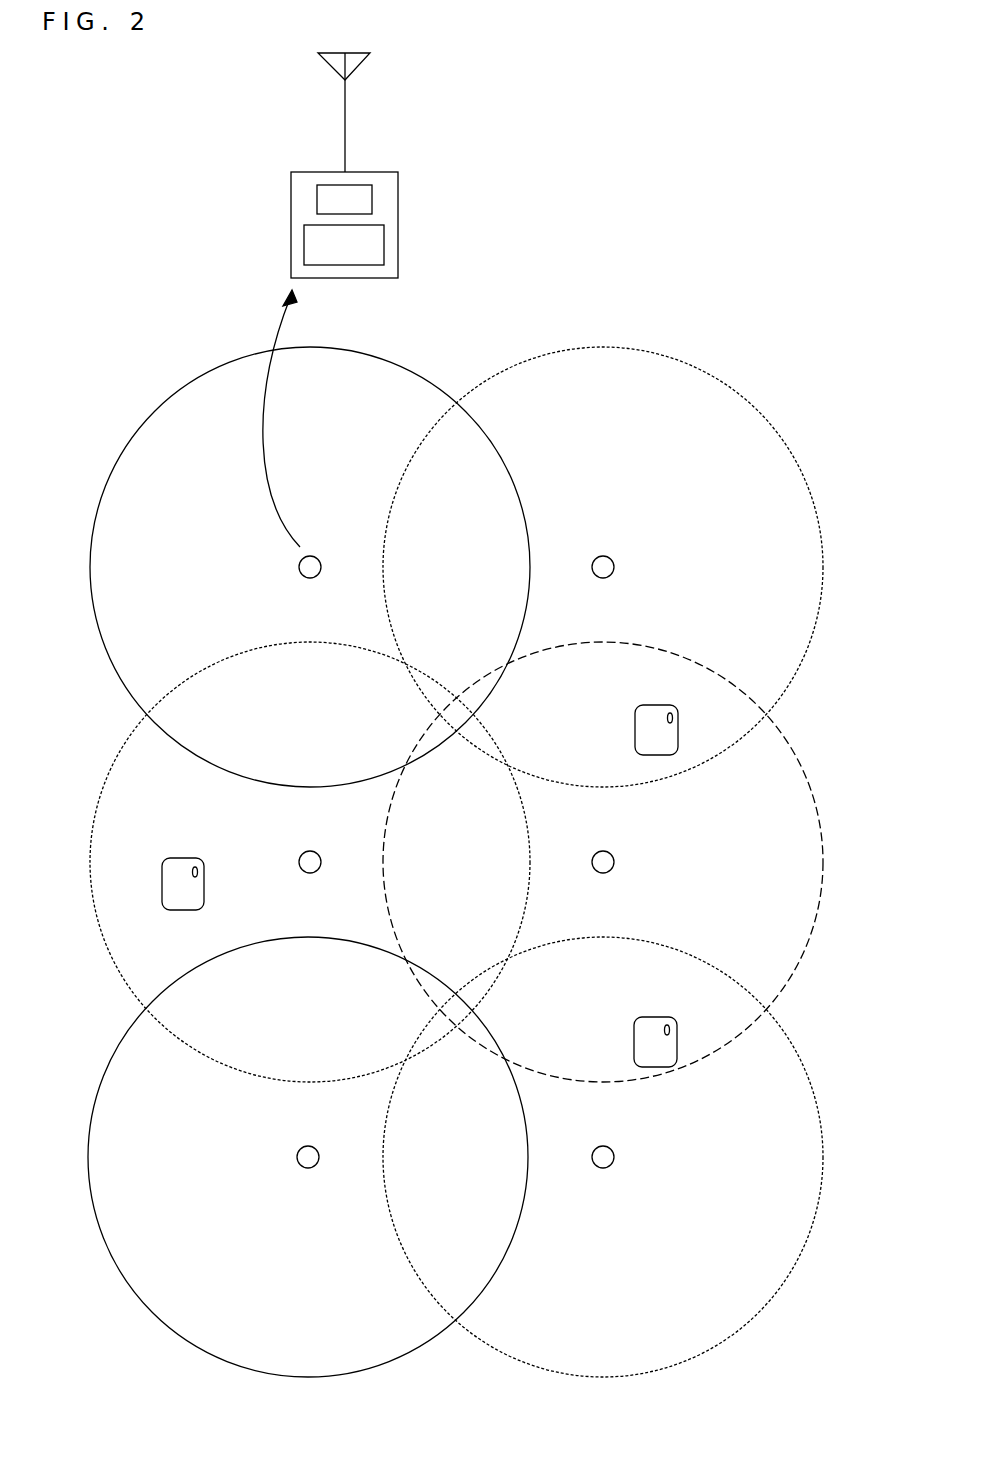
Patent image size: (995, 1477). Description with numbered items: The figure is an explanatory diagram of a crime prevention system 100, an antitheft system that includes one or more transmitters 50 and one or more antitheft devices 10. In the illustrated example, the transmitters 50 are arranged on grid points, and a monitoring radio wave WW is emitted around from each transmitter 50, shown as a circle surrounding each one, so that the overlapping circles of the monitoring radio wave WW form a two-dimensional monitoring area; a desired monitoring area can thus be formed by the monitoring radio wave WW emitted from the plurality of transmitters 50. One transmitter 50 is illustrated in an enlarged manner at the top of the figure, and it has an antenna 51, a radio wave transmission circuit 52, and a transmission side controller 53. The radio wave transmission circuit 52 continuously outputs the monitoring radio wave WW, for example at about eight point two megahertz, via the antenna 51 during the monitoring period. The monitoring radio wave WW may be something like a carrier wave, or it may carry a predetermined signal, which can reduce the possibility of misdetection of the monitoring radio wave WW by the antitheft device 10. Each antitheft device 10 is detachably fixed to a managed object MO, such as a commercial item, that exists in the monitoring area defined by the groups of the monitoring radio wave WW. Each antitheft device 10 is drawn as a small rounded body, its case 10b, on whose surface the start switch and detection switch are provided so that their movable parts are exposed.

The crime prevention system 100 is at (790, 78).
The transmitter 50 is at (404, 117).
The antenna 51 is at (345, 118).
The radio wave transmission circuit 52 is at (317, 195).
The transmission side controller 53 is at (304, 240).
The monitoring radio wave WW is at (222, 365).
The antitheft device 10 is at (680, 718).
The case 10b is at (666, 718).
The managed object MO is at (657, 705).